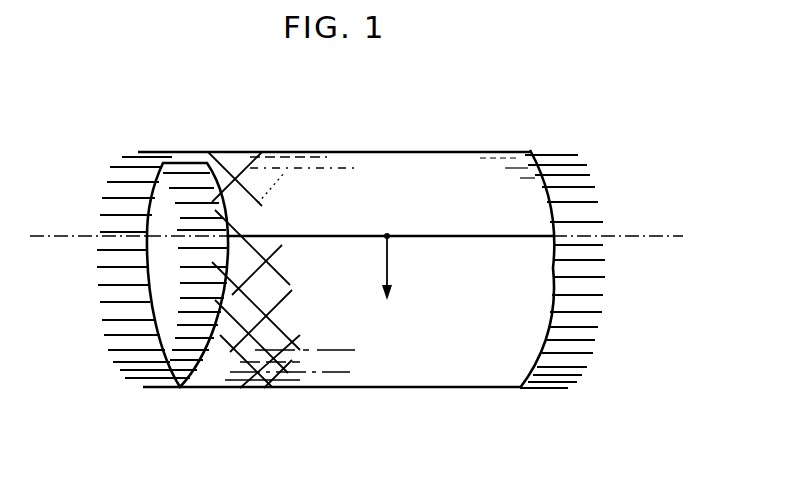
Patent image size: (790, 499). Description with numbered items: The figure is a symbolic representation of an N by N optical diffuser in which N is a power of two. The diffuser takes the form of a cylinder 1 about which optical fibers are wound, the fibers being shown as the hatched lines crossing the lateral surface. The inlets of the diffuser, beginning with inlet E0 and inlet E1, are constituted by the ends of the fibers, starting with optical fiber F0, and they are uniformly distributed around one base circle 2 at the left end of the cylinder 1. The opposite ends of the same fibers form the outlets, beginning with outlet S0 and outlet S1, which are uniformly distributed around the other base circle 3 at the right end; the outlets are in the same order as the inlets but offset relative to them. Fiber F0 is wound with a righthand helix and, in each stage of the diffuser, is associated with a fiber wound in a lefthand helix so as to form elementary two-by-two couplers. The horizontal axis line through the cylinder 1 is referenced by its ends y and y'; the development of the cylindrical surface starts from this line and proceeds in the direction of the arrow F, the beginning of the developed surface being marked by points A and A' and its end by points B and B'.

The cylinder 1 is at (336, 180).
The base circle 2 is at (210, 362).
The base circle 3 is at (545, 360).
The inlet E0 is at (180, 247).
The inlet E1 is at (180, 266).
The optical fiber F0 is at (252, 274).
The arrow F is at (393, 267).
The outlet S0 is at (604, 245).
The outlet S1 is at (604, 260).
The point A is at (252, 255).
The point B is at (252, 225).
The point A' is at (530, 255).
The point B' is at (530, 225).
The line YY' y is at (78, 238).
The line YY' y' is at (628, 238).